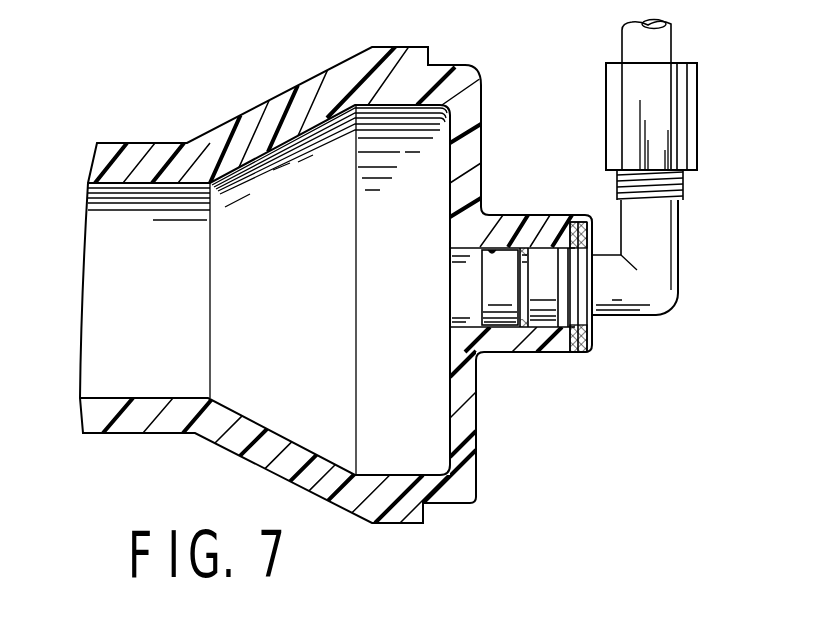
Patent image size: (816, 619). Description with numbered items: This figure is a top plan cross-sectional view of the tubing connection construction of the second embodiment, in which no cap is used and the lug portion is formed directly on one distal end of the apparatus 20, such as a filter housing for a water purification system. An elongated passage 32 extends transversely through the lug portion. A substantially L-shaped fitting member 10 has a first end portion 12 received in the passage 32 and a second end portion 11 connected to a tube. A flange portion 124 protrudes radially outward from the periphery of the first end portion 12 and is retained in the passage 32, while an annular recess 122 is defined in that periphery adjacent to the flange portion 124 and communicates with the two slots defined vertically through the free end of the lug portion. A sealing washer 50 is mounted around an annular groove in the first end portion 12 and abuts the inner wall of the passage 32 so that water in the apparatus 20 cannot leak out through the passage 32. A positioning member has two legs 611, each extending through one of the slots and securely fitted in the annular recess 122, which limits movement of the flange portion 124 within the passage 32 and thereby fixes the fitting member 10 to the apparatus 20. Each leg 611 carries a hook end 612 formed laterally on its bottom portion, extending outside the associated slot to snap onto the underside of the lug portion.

The fitting member 10 is at (700, 310).
The second end portion 11 is at (679, 228).
The first end portion 12 is at (548, 353).
The apparatus 20 is at (470, 84).
The passage 32 is at (505, 230).
The sealing washer 50 is at (520, 353).
The annular recess 122 is at (586, 240).
The flange portion 124 is at (568, 240).
The legs 611 is at (588, 340).
The hook end 612 is at (585, 354).